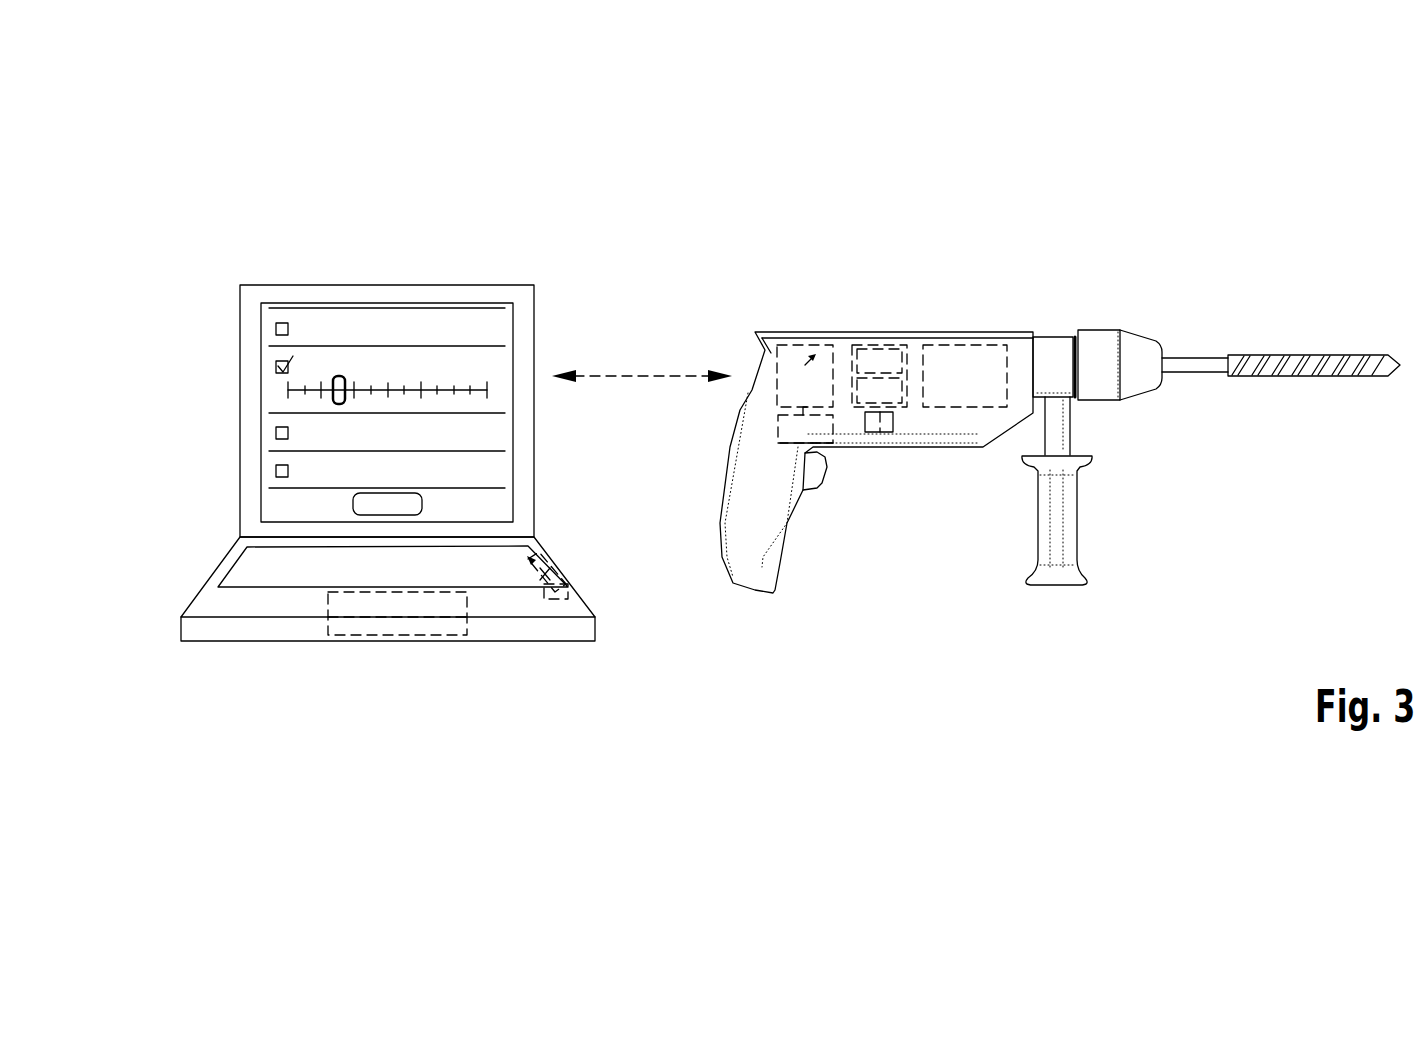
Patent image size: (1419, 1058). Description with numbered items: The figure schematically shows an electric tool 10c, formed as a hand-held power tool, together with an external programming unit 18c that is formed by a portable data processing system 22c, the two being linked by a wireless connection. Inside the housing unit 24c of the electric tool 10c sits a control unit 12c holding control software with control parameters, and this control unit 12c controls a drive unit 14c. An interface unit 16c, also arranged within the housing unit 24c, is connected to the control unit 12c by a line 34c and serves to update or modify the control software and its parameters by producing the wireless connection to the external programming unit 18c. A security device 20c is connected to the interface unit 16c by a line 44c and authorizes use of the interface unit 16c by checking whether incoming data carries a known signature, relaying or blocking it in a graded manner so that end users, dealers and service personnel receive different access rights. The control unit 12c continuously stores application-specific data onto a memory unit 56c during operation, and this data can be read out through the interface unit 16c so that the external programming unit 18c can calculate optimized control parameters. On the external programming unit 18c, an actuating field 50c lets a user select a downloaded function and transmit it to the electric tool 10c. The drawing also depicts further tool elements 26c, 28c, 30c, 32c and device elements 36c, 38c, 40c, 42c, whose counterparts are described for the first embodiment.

The electric tool 10c is at (1029, 405).
The control unit 12c is at (915, 432).
The drive unit 14c is at (982, 393).
The interface unit 16c is at (843, 377).
The external programming unit 18c is at (238, 655).
The security device 20c is at (787, 439).
The portable data processing system 22c is at (181, 654).
The housing unit 24c is at (1023, 343).
The insert tool (drill bit) 26c is at (1282, 352).
The energy storage unit 28c is at (913, 373).
The sensor unit 30c is at (856, 405).
The communication interface 32c is at (887, 357).
The line 34c is at (840, 377).
The input unit (touchpad) 36c is at (412, 603).
The communication interface of external unit 38c is at (527, 588).
The display unit 40c is at (295, 292).
The input unit (keyboard) 42c is at (313, 567).
The line 44c is at (778, 422).
The actuating field 50c is at (357, 503).
The memory unit 56c is at (882, 432).